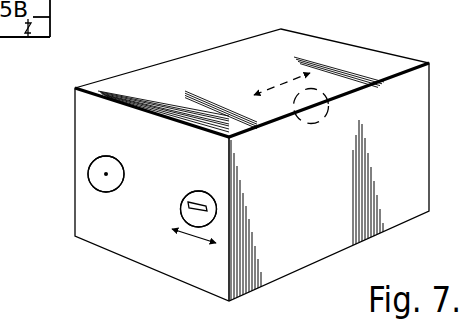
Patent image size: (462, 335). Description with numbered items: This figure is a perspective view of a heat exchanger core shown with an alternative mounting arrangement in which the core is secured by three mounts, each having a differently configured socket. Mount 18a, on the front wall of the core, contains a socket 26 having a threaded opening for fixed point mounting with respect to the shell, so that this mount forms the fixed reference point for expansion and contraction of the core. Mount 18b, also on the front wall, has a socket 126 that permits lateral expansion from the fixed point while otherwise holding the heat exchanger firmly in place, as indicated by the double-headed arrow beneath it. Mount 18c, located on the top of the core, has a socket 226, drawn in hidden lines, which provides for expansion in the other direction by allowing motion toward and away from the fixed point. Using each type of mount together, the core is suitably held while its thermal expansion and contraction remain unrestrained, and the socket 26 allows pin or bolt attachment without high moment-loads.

The mount 18a is at (93, 162).
The socket 26 is at (105, 174).
The mount 18b is at (197, 191).
The socket 126 is at (182, 212).
The socket 226 is at (308, 108).
The mount 18c is at (384, 62).